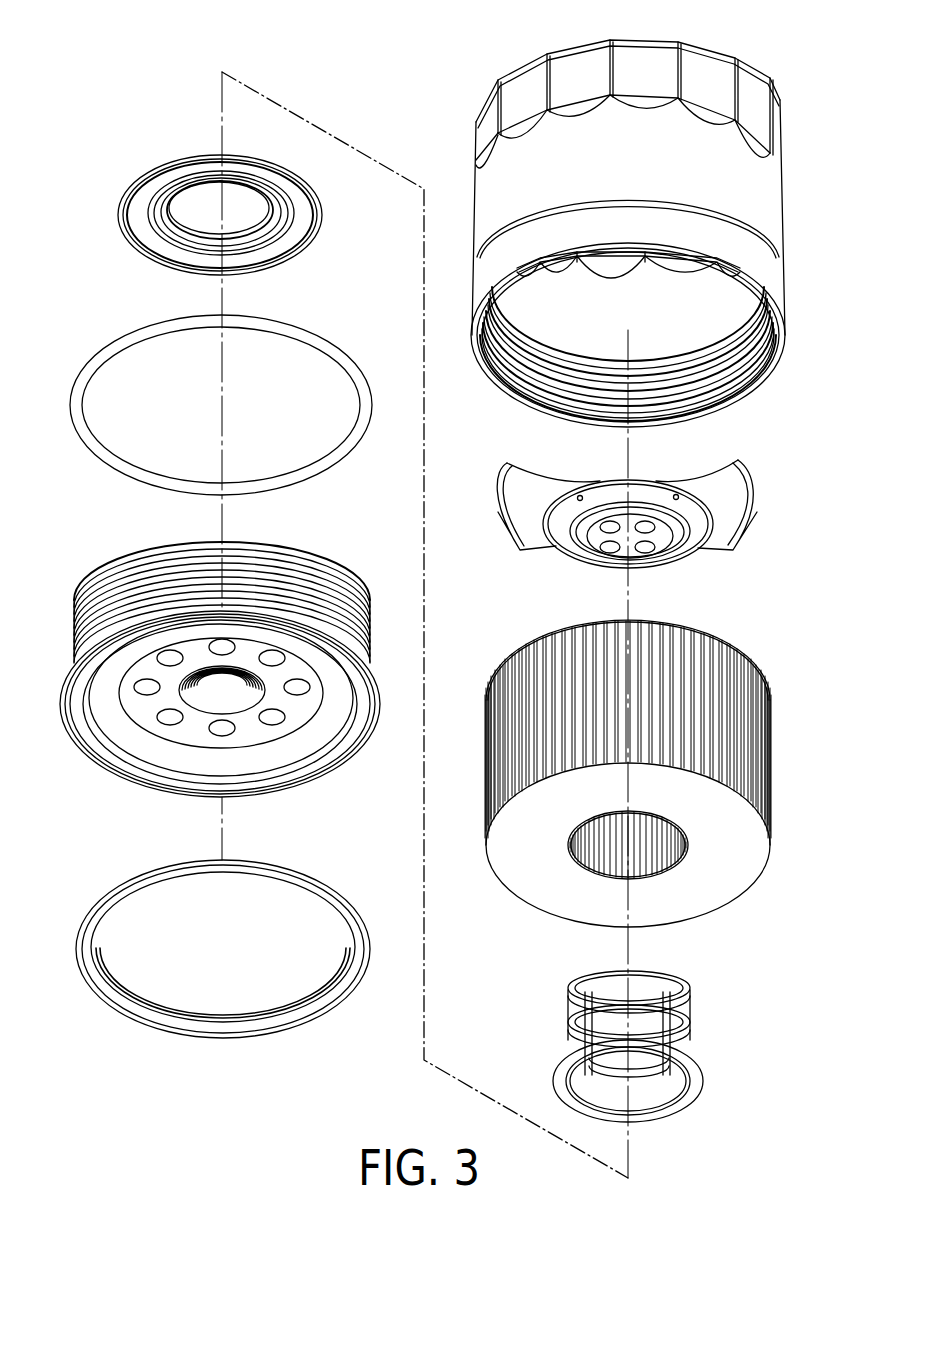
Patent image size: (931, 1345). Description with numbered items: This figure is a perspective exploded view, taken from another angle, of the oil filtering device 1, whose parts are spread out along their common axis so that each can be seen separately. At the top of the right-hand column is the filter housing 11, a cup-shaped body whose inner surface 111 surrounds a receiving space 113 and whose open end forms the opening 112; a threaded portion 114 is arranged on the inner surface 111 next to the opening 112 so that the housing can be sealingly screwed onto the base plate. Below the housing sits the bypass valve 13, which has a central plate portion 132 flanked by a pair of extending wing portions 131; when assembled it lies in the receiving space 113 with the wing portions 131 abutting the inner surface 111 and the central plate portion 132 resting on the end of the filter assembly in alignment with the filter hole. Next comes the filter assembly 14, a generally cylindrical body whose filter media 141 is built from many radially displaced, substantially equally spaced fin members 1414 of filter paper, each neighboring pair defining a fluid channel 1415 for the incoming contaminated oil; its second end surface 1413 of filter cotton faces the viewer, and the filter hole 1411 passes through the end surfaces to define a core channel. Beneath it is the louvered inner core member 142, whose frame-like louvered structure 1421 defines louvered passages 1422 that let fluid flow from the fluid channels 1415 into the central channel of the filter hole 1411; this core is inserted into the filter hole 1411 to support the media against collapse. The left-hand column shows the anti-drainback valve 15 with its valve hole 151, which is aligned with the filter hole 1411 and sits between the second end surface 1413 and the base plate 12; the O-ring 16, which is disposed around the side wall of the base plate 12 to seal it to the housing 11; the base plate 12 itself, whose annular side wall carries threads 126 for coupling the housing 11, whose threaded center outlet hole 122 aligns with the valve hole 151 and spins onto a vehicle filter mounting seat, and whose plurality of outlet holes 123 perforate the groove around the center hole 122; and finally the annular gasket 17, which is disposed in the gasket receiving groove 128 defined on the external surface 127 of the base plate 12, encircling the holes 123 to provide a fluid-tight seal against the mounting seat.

The oil filtering device 1 is at (168, 37).
The filter housing 11 is at (487, 135).
The inner surface 111 is at (703, 325).
The opening 112 is at (470, 350).
The receiving space 113 is at (525, 315).
The threaded portion 114 is at (748, 350).
The base plate 12 is at (78, 748).
The threaded center outlet hole 122 is at (200, 702).
The outlet holes 123 is at (168, 720).
The threads 126 is at (103, 590).
The external surface 127 is at (293, 778).
The gasket receiving groove 128 is at (348, 724).
The bypass valve 13 is at (752, 468).
The extending wing portions 131 is at (500, 527).
The central plate portion 132 is at (662, 556).
The filter assembly 14 is at (828, 655).
The filter media 141 is at (773, 737).
The filter hole 1411 is at (610, 875).
The second end surface 1413 is at (513, 870).
The fin members 1414 is at (492, 680).
The fluid channel 1415 is at (555, 637).
The louvered inner core member 142 is at (692, 1090).
The frame-like louvered structure 1421 is at (683, 983).
The louvered passages 1422 is at (685, 1028).
The anti-drainback valve 15 is at (125, 208).
The valve hole 151 is at (198, 232).
The O-ring 16 is at (93, 357).
The annular gasket 17 is at (123, 1020).